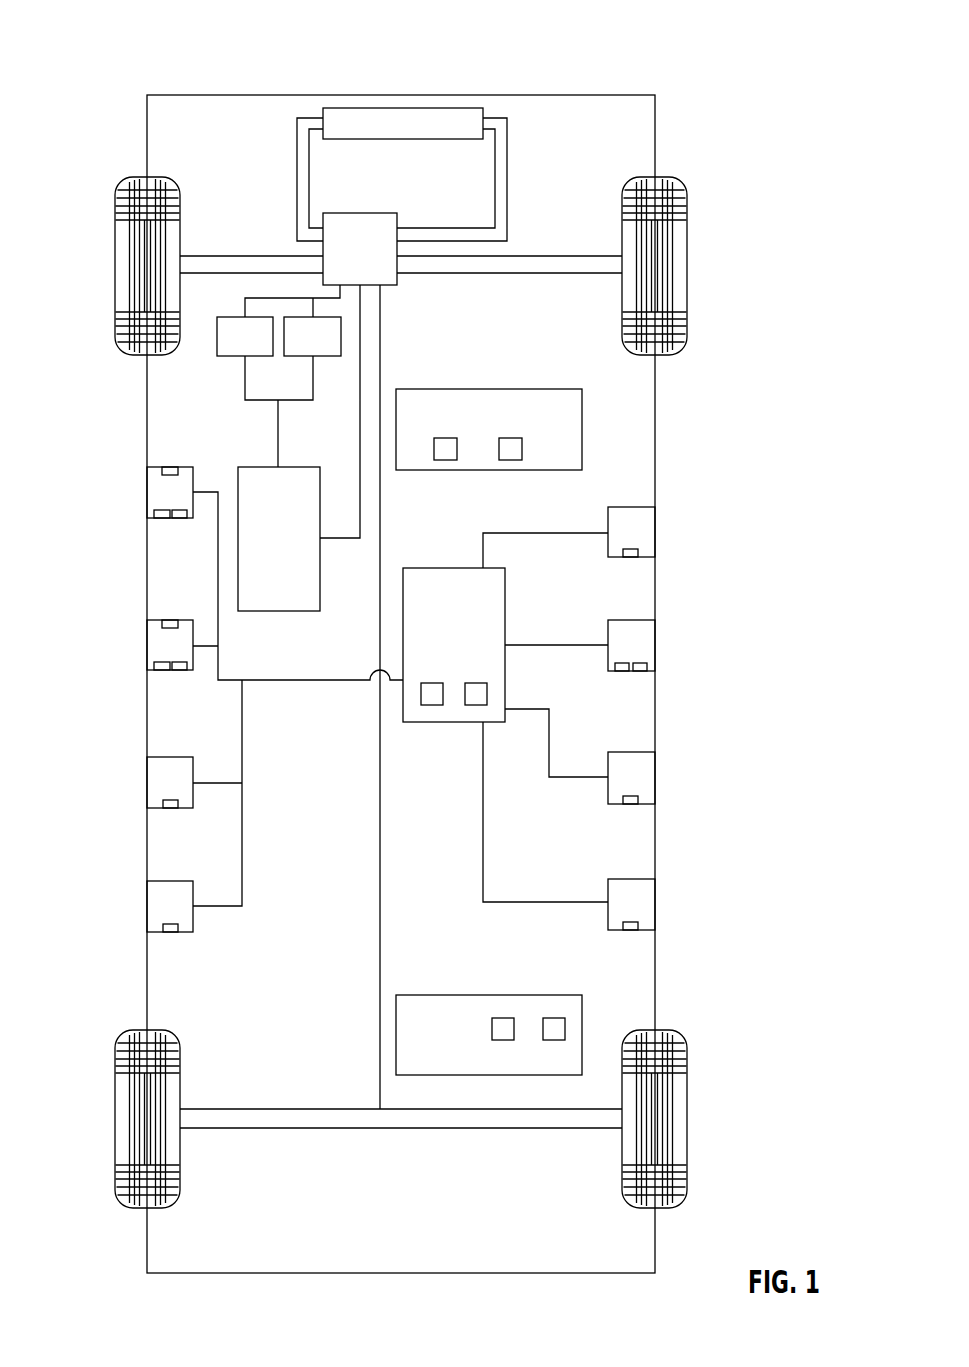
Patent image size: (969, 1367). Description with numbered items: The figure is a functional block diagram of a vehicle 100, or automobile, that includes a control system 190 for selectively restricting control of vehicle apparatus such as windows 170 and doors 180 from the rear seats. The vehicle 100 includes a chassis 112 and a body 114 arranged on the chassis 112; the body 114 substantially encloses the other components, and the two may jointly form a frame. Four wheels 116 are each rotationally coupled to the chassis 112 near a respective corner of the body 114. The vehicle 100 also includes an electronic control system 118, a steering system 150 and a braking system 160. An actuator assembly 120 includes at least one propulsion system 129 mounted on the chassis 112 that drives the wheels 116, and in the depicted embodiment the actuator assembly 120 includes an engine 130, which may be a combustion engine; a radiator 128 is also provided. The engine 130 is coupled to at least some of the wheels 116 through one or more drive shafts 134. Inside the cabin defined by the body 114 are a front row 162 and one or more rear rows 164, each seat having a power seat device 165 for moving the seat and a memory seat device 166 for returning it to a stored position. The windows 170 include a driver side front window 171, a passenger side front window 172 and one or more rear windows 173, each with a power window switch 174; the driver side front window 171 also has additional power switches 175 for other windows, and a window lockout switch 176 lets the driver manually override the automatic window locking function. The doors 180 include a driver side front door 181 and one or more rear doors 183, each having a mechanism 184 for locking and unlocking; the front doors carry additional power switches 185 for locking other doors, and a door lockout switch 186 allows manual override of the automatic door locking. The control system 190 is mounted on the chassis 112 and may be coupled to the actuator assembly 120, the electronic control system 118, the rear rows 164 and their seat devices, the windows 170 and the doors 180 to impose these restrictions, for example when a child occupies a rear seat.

The vehicle 100 is at (128, 42).
The chassis 112 is at (380, 732).
The body 114 is at (147, 735).
The wheels 116 is at (115, 267).
The electronic control system 118 is at (299, 551).
The actuator assembly 120 is at (399, 302).
The radiator 128 is at (395, 107).
The propulsion system 129 is at (370, 213).
The engine 130 is at (380, 248).
The drive shafts 134 is at (257, 256).
The steering system 150 is at (265, 350).
The braking system 160 is at (332, 350).
The front row 162 is at (528, 389).
The rear row 164 is at (447, 995).
The power seat device 165 is at (445, 460).
The memory seat device 166 is at (508, 460).
The windows 170 is at (401, 622).
The driver side front window 171 is at (147, 490).
The passenger side front window 172 is at (655, 514).
The rear windows 173 is at (147, 772).
The power window switch 174 is at (170, 467).
The additional power switches 175 is at (154, 514).
The window lockout switch 176 is at (180, 518).
The doors 180 is at (401, 760).
The driver side front door 181 is at (147, 643).
The rear doors 183 is at (147, 899).
The mechanism 184 is at (170, 620).
The additional power switches 185 is at (154, 667).
The door lockout switch 186 is at (180, 670).
The control system 190 is at (457, 568).